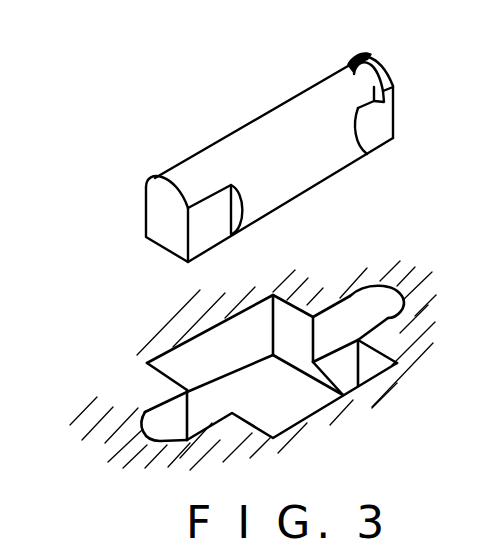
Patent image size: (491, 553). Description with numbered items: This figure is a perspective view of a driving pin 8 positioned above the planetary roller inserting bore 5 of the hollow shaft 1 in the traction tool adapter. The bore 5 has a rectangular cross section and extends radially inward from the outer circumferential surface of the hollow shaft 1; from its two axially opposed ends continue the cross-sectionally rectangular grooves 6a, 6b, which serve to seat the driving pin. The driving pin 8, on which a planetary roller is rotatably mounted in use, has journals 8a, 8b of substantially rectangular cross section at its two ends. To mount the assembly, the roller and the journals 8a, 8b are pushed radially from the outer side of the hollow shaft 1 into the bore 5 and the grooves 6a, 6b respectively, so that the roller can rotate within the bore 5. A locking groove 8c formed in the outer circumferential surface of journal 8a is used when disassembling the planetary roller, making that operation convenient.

The hollow shaft 1 is at (405, 337).
The planetary roller inserting bore 5 is at (290, 408).
The groove 6a is at (357, 305).
The groove 6b is at (163, 423).
The driving pin 8 is at (247, 147).
The journal 8a is at (380, 128).
The journal 8b is at (202, 233).
The locking groove 8c is at (353, 70).